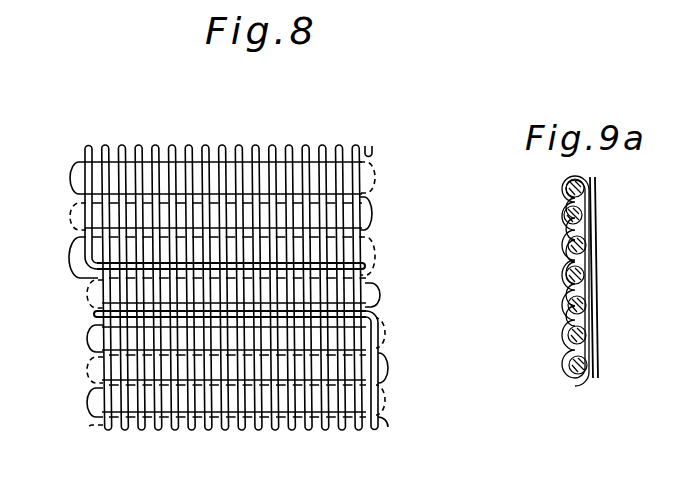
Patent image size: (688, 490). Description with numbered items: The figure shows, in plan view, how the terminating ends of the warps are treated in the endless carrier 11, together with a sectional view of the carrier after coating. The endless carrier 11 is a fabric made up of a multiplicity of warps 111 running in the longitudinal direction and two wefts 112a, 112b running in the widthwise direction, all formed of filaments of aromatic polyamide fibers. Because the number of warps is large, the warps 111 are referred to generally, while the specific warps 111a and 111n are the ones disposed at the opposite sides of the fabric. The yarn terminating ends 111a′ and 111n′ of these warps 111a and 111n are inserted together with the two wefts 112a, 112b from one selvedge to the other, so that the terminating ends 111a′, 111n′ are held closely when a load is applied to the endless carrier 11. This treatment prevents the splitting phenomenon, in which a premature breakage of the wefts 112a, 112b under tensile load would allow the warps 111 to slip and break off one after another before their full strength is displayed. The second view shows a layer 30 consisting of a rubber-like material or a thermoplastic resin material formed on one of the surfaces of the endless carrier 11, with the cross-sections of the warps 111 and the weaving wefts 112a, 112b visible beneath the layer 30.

In FIG. 8, the endless carrier 11 is at (301, 128).
In FIG. 8, the warp 111a is at (88, 143).
In FIG. 8, the yarn terminating end of warp 111a′ is at (370, 266).
In FIG. 8, the warp 111n is at (386, 427).
In FIG. 8, the yarn terminating end of warp 111n′ is at (94, 315).
In FIG. 8, the weft 112a is at (376, 217).
In FIG. 9A, the weft 112a is at (568, 273).
In FIG. 8, the weft 112b is at (380, 172).
In FIG. 9A, the weft 112b is at (566, 290).
In FIG. 9A, the warps 111 is at (565, 243).
In FIG. 9A, the layer 30 is at (591, 262).